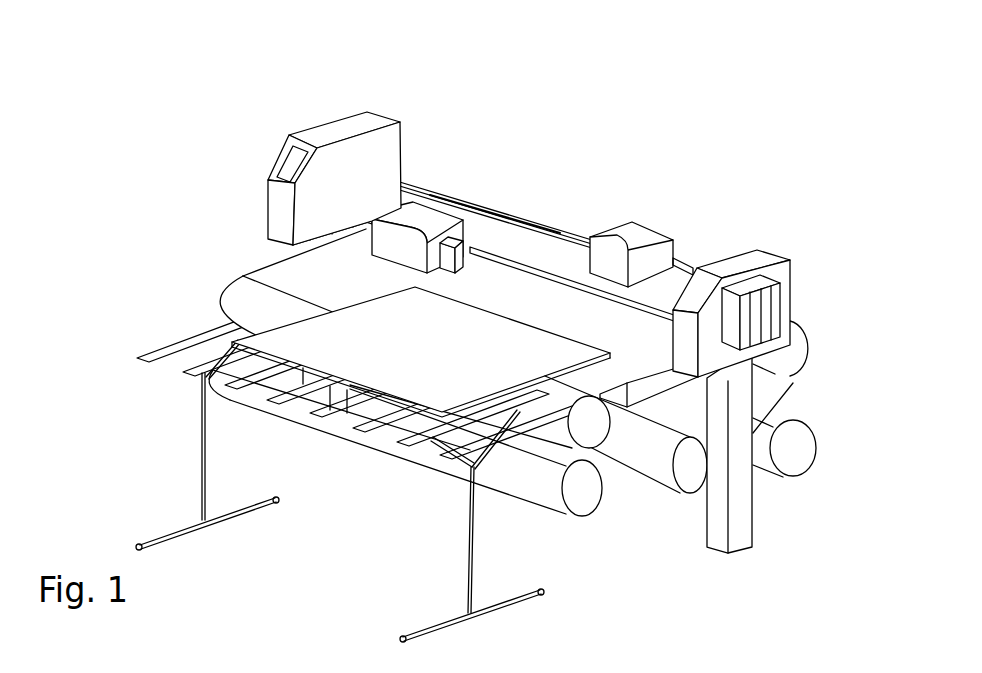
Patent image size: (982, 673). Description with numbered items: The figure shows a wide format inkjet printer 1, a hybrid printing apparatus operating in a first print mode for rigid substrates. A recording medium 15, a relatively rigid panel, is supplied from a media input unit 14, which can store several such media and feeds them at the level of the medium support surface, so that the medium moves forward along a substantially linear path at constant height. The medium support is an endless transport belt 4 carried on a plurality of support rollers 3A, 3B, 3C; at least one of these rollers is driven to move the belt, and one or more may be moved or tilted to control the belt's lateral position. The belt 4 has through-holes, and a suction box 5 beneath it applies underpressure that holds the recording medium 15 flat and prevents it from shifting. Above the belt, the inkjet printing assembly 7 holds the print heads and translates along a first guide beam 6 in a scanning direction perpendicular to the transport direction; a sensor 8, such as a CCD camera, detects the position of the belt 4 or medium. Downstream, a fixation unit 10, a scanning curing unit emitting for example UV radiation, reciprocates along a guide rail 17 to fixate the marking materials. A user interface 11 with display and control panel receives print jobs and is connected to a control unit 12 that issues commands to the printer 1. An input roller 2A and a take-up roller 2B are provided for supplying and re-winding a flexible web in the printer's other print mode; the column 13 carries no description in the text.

The wide format inkjet printer 1 is at (192, 93).
The input roller 2A is at (582, 563).
The take-up roller 2B is at (812, 502).
The support roller 3A is at (617, 498).
The support roller 3B is at (712, 496).
The support roller 3C is at (820, 352).
The endless transport belt 4 is at (305, 274).
The suction box 5 is at (614, 416).
The first guide beam 6 is at (493, 222).
The inkjet printing assembly 7 is at (424, 186).
The sensor 8 is at (542, 202).
The fixation unit 10 is at (631, 218).
The user interface 11 is at (283, 125).
The control unit 12 is at (334, 148).
The column with ventilation 13 is at (789, 260).
The media input unit 14 is at (117, 345).
The recording medium 15 is at (320, 316).
The guide rail 17 is at (492, 197).